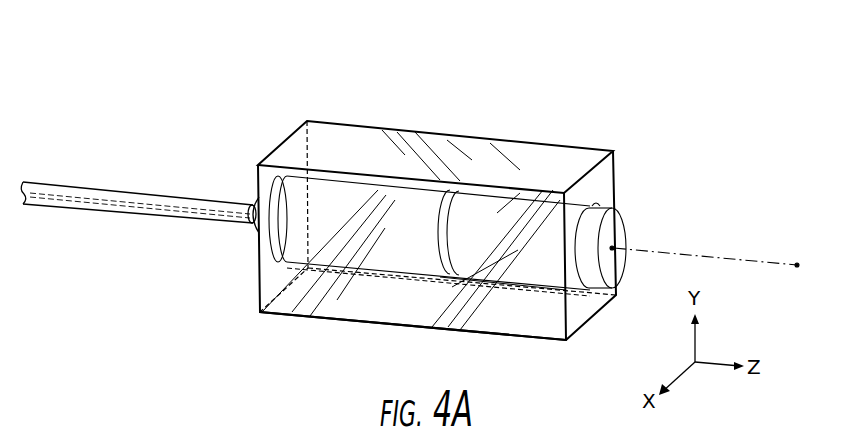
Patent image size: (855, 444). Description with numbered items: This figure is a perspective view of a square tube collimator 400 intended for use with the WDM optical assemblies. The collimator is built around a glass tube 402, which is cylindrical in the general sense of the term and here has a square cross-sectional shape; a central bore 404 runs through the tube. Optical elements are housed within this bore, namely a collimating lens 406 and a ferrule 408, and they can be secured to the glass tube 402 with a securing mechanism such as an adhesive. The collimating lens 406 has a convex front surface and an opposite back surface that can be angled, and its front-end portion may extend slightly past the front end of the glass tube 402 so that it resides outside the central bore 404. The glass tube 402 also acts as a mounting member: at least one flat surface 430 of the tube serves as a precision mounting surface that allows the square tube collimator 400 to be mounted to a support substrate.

The square tube collimator 400 is at (410, 200).
The glass tube 402 is at (614, 150).
The central bore 404 is at (517, 285).
The collimating lens 406 is at (477, 220).
The ferrule 408 is at (337, 212).
The flat surface 430 is at (358, 325).